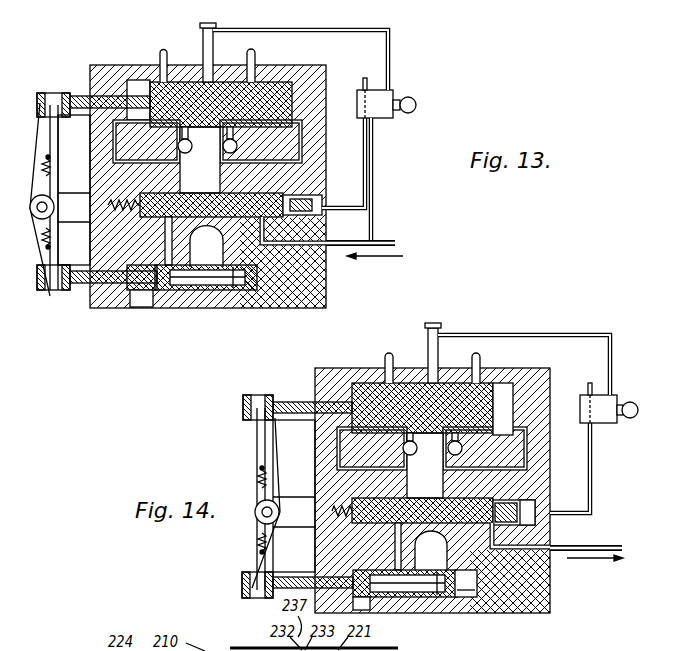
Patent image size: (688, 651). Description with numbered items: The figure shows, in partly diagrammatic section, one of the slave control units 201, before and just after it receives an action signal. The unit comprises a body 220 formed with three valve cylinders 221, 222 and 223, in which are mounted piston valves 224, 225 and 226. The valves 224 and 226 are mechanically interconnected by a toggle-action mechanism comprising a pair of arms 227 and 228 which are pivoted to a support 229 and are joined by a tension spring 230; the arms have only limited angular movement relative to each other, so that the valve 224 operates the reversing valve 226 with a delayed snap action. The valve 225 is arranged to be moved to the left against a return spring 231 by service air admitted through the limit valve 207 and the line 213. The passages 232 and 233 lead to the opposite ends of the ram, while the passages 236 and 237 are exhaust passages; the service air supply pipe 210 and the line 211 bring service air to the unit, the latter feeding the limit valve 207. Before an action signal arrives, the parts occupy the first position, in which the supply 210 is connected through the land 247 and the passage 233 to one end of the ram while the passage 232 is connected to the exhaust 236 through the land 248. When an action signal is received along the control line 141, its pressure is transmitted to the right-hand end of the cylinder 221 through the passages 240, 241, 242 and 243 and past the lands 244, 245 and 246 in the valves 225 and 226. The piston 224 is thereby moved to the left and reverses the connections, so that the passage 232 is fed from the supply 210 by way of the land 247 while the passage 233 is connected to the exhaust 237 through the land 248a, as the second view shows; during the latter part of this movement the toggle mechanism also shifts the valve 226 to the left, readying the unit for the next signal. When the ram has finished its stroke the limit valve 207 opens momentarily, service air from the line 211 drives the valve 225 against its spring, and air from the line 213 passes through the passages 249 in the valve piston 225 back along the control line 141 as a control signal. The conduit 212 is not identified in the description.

In FIG. 13, the control line 141 is at (400, 217).
In FIG. 14, the control line 141 is at (568, 545).
In FIG. 13, the slave control unit 201 is at (290, 302).
In FIG. 14, the slave control unit 201 is at (547, 597).
In FIG. 13, the limit valve 207 is at (374, 102).
In FIG. 14, the limit valve 207 is at (596, 415).
In FIG. 13, the service air supply pipe 210 is at (208, 82).
In FIG. 14, the service air supply pipe 210 is at (438, 345).
In FIG. 13, the line 211 is at (340, 28).
In FIG. 14, the line 211 is at (607, 360).
In FIG. 13, the inlet conduit 212 is at (204, 27).
In FIG. 14, the inlet conduit 212 is at (265, 637).
In FIG. 13, the line 213 is at (372, 210).
In FIG. 14, the line 213 is at (587, 430).
In FIG. 13, the body 220 is at (245, 300).
In FIG. 14, the body 220 is at (532, 613).
In FIG. 13, the valve cylinder 221 is at (133, 82).
In FIG. 14, the valve cylinder 221 is at (505, 400).
In FIG. 13, the valve cylinder 222 is at (132, 278).
In FIG. 14, the valve cylinder 222 is at (535, 503).
In FIG. 13, the valve cylinder 223 is at (148, 308).
In FIG. 14, the valve cylinder 223 is at (466, 583).
In FIG. 13, the piston valve 224 is at (275, 95).
In FIG. 14, the piston valve 224 is at (370, 395).
In FIG. 13, the piston valve 225 is at (285, 205).
In FIG. 14, the piston valve 225 is at (462, 560).
In FIG. 13, the piston valve 226 is at (175, 300).
In FIG. 14, the piston valve 226 is at (457, 595).
In FIG. 13, the arm 227 is at (50, 134).
In FIG. 14, the arm 227 is at (258, 440).
In FIG. 13, the arm 228 is at (55, 291).
In FIG. 14, the arm 228 is at (252, 520).
In FIG. 13, the support 229 is at (73, 210).
In FIG. 14, the support 229 is at (262, 490).
In FIG. 13, the tension spring 230 is at (50, 163).
In FIG. 14, the tension spring 230 is at (262, 472).
In FIG. 13, the return spring 231 is at (107, 283).
In FIG. 14, the return spring 231 is at (335, 500).
In FIG. 13, the passage 232 is at (98, 96).
In FIG. 14, the passage 232 is at (405, 450).
In FIG. 13, the passage 233 is at (288, 125).
In FIG. 14, the passage 233 is at (500, 400).
In FIG. 13, the exhaust passage 236 is at (160, 56).
In FIG. 14, the exhaust passage 236 is at (393, 353).
In FIG. 13, the exhaust passage 237 is at (245, 90).
In FIG. 14, the exhaust passage 237 is at (476, 395).
In FIG. 13, the passage 240 is at (312, 250).
In FIG. 14, the passage 240 is at (535, 560).
In FIG. 13, the passage 241 is at (313, 298).
In FIG. 14, the passage 241 is at (493, 606).
In FIG. 13, the passage 242 is at (214, 300).
In FIG. 14, the passage 242 is at (422, 596).
In FIG. 13, the passage 243 is at (290, 148).
In FIG. 14, the passage 243 is at (530, 395).
In FIG. 13, the land 244 is at (300, 220).
In FIG. 14, the land 244 is at (472, 546).
In FIG. 13, the land 245 is at (145, 300).
In FIG. 13, the land 246 is at (293, 177).
In FIG. 13, the land 247 is at (212, 95).
In FIG. 14, the land 247 is at (410, 387).
In FIG. 13, the land 248 is at (178, 82).
In FIG. 14, the land 248 is at (422, 419).
In FIG. 13, the land 248a is at (258, 80).
In FIG. 14, the land 248a is at (452, 383).
In FIG. 13, the passages 249 is at (368, 196).
In FIG. 14, the passages 249 is at (548, 450).